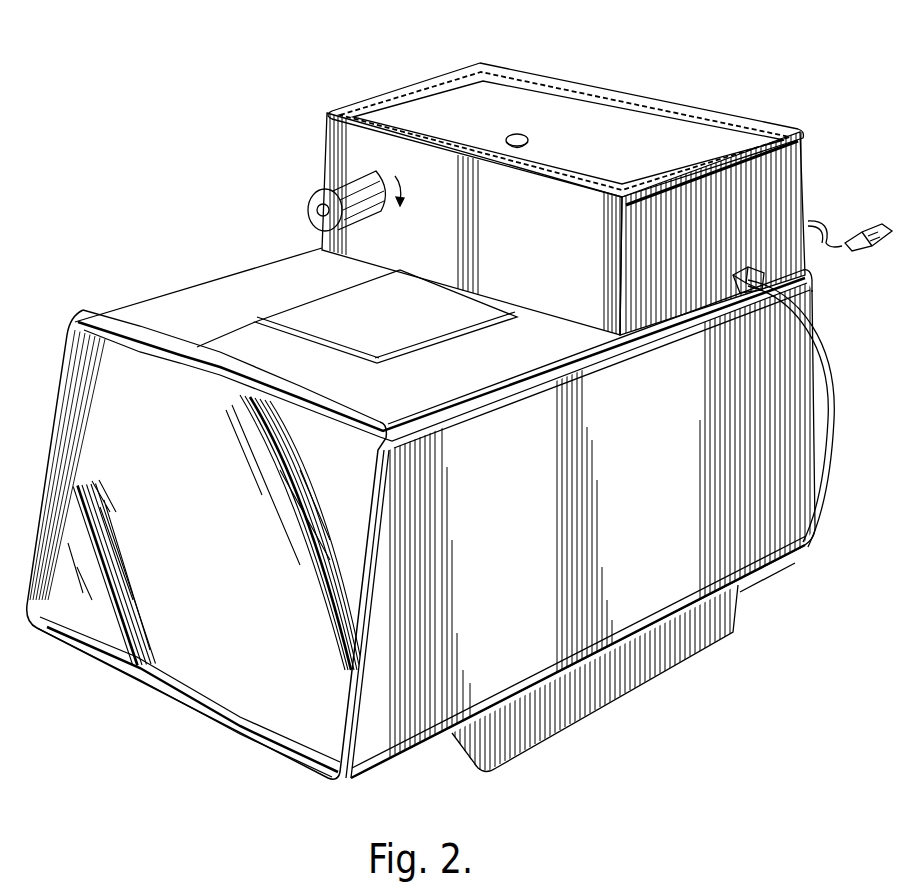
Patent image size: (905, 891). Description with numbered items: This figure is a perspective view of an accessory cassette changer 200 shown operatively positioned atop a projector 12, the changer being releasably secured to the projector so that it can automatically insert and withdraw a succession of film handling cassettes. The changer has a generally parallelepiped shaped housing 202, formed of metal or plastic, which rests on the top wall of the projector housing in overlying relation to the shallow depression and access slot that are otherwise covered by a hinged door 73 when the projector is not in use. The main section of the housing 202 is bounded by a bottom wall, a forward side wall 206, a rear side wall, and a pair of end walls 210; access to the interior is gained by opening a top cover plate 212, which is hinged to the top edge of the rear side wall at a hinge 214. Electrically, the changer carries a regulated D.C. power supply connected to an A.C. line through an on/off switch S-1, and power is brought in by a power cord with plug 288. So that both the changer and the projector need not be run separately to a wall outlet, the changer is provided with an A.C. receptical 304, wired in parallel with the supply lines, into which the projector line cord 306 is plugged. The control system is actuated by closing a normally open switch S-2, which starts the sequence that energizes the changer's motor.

The projector 12 is at (445, 501).
The hinged door 73 is at (302, 318).
The accessory cassette changer 200 is at (554, 172).
The housing 202 is at (565, 103).
The forward side wall 206 is at (562, 290).
The end walls 210 is at (324, 142).
The top cover plate 212 is at (576, 145).
The hinge 214 is at (612, 95).
The power cord with plug 288 is at (811, 204).
The A.C. receptical 304 is at (736, 284).
The projector line cord 306 is at (832, 388).
The on/off switch S-1 is at (318, 193).
The normally open switch S-2 is at (310, 209).